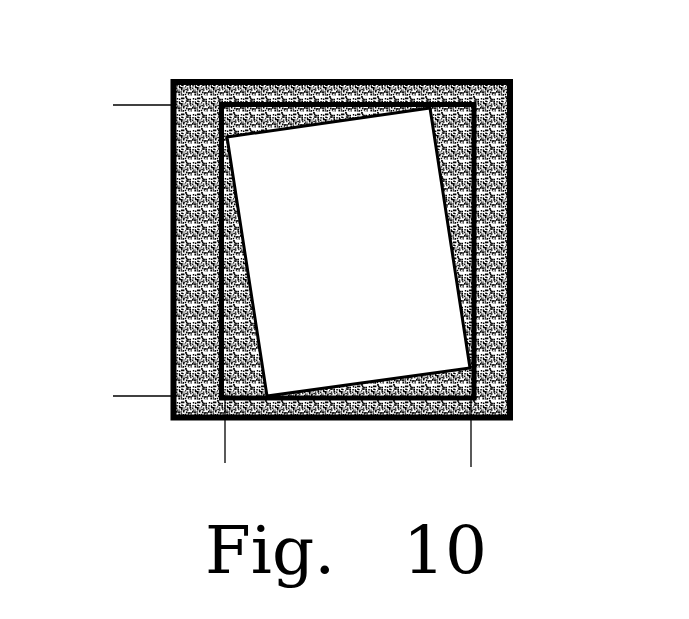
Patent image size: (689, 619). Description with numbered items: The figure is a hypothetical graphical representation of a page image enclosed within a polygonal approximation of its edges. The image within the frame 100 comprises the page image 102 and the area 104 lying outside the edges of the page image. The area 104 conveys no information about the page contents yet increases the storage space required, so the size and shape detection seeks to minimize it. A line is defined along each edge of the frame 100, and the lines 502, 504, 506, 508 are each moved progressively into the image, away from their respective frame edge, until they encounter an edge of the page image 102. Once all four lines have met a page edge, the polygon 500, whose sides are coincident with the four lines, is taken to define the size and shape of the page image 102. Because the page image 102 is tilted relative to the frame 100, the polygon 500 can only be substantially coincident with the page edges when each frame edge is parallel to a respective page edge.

The frame 100 is at (200, 80).
The page image 102 is at (320, 103).
The area outside the edges of the page image 104 is at (500, 146).
The polygon 500 is at (451, 103).
The line 502 is at (140, 105).
The line 504 is at (142, 396).
The line 506 is at (225, 443).
The line 508 is at (471, 445).